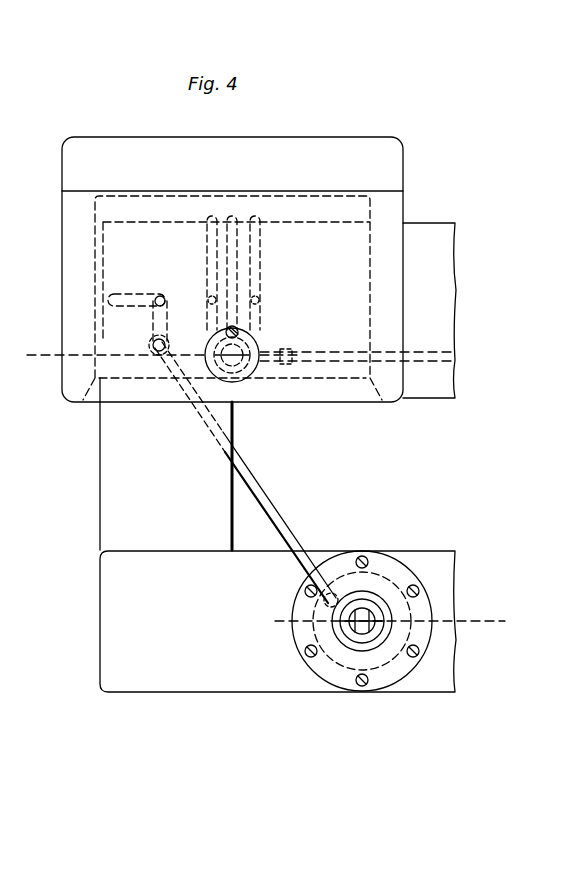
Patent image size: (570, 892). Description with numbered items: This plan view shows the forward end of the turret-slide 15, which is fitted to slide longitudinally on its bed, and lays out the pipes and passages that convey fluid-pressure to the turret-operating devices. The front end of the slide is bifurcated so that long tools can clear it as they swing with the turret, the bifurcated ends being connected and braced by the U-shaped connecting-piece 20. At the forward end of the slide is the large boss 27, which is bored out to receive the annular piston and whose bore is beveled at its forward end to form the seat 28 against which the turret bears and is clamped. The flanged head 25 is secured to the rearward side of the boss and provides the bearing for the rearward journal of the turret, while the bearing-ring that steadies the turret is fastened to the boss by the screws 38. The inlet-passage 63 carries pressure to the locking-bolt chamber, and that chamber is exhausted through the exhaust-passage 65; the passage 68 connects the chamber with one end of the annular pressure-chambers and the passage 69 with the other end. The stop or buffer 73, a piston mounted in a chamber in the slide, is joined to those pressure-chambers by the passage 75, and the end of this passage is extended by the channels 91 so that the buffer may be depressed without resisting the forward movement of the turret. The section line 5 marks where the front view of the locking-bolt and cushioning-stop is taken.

The section line 5 5 is at (37, 385).
The turret-slide 15 is at (440, 392).
The U-shaped connecting-piece 20 is at (110, 478).
The flanged head 25 is at (398, 154).
The boss 27 is at (72, 272).
The beveled seat 28 is at (376, 390).
The screws 38 is at (240, 334).
The inlet-passage 63 is at (447, 352).
The exhaust-passage 65 is at (232, 230).
The passage 68 is at (258, 273).
The passage 69 is at (210, 273).
The stop or buffer 73 is at (372, 618).
The passage 75 is at (275, 518).
The channels 91 is at (131, 301).